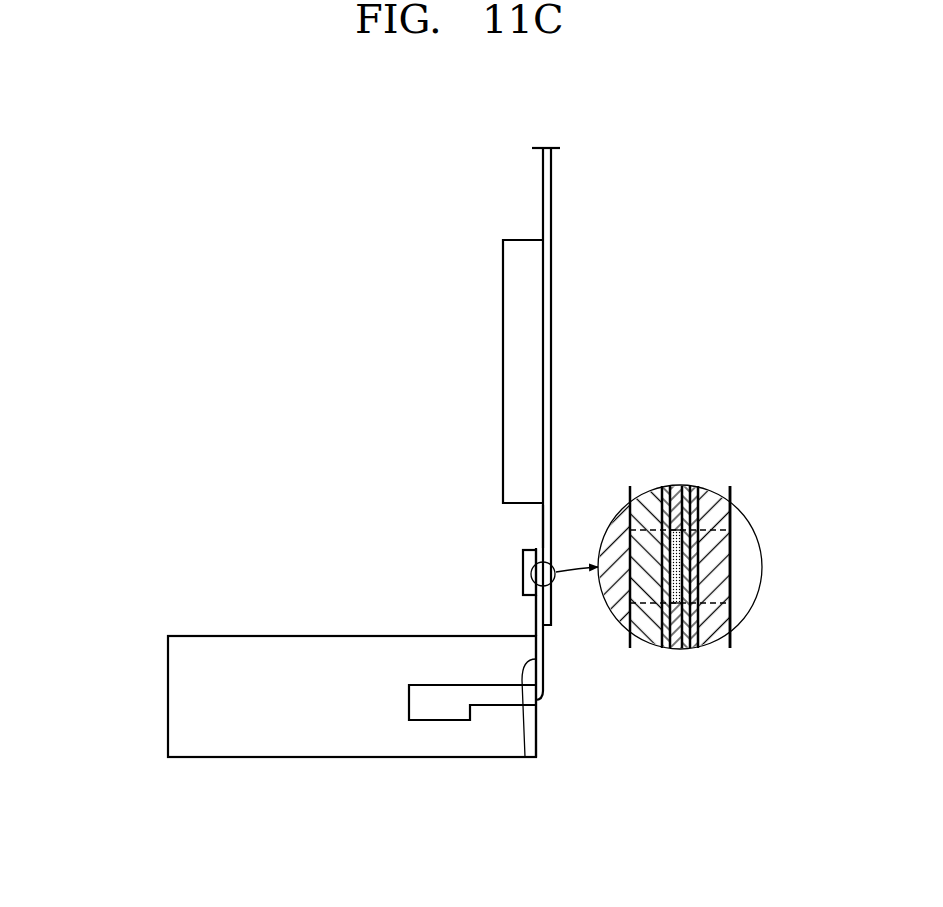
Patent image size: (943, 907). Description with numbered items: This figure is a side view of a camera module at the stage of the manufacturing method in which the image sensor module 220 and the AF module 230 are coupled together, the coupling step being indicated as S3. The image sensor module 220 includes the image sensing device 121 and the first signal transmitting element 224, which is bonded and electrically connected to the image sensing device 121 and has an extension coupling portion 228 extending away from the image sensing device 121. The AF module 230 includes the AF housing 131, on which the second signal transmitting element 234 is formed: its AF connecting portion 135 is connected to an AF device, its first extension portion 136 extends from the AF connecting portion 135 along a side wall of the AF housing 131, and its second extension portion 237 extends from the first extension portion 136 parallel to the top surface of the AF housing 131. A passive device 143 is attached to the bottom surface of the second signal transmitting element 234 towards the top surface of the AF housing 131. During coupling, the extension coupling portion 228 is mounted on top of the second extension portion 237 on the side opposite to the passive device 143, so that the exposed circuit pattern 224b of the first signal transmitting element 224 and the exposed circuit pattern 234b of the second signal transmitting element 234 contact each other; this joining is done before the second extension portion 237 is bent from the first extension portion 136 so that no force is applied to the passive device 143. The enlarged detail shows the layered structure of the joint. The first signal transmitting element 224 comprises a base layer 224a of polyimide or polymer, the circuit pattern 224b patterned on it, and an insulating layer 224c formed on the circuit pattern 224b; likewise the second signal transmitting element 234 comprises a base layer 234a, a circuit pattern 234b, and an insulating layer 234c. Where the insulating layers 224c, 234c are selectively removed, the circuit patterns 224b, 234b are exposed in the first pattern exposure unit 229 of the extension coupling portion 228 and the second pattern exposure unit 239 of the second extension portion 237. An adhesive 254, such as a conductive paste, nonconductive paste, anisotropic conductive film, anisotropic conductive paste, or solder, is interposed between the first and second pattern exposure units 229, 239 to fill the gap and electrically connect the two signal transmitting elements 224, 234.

The image sensor module 220 is at (462, 254).
The first signal transmitting element 224 is at (556, 366).
The image sensing device 121 is at (513, 377).
The extension coupling portion 228 is at (543, 520).
The passive device 143 is at (523, 563).
The second extension portion 237 is at (536, 607).
The AF housing 131 is at (306, 648).
The coupling step S3 is at (158, 697).
The AF module 230 is at (307, 778).
The AF connecting portion 135 is at (446, 710).
The first extension portion 136 is at (525, 757).
The second signal transmitting element 234 is at (553, 700).
The second pattern exposure unit 239 is at (628, 540).
The base layer 234a is at (642, 503).
The circuit pattern 234b is at (660, 490).
The insulating layer 234c is at (680, 487).
The adhesive 254 is at (656, 615).
The base layer 224a is at (715, 623).
The circuit pattern 224b is at (697, 645).
The insulating layer 224c is at (679, 648).
The first pattern exposure unit 229 is at (732, 566).